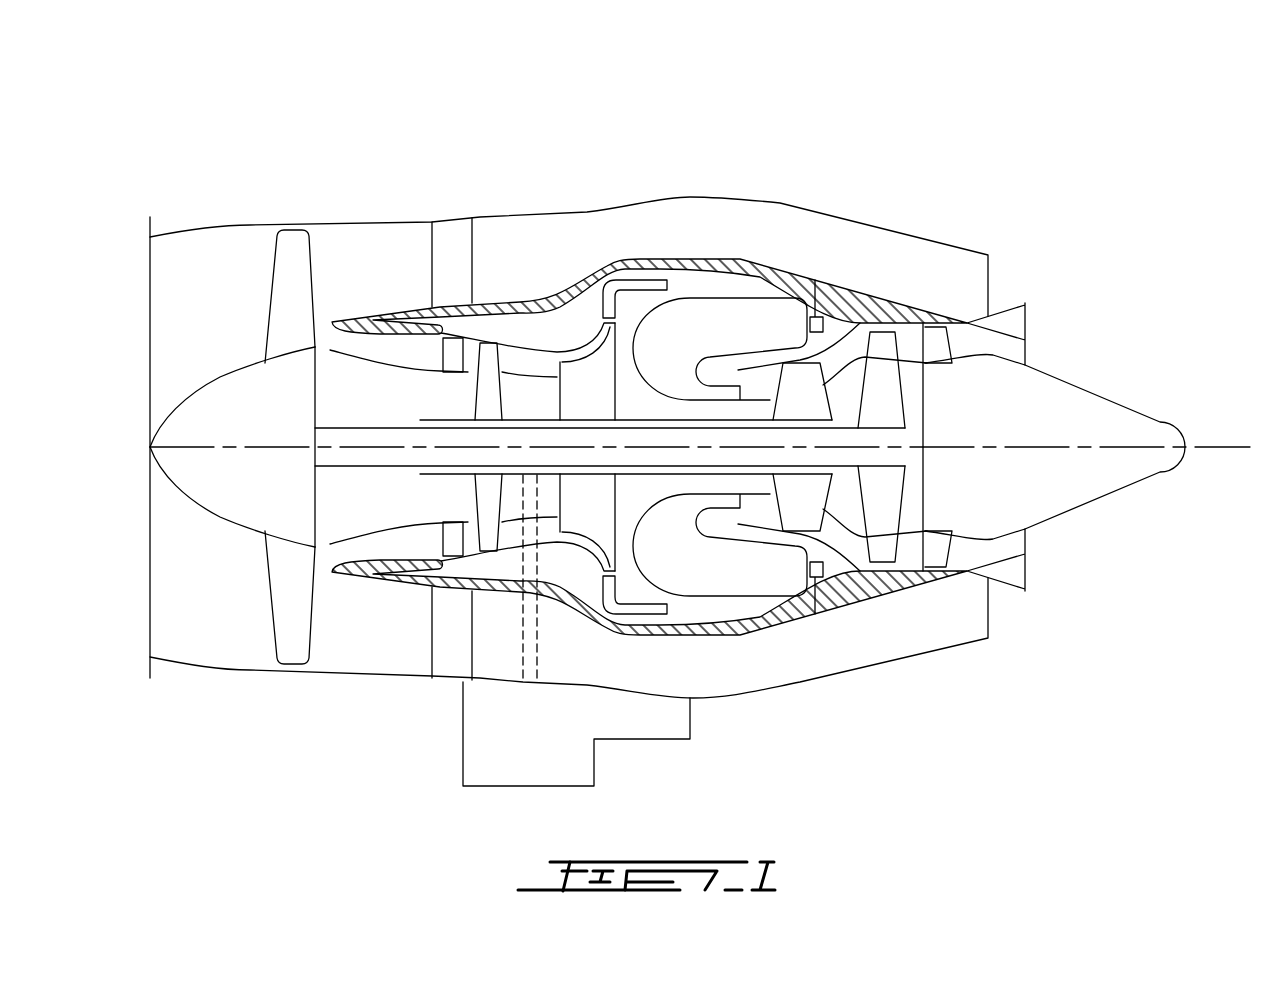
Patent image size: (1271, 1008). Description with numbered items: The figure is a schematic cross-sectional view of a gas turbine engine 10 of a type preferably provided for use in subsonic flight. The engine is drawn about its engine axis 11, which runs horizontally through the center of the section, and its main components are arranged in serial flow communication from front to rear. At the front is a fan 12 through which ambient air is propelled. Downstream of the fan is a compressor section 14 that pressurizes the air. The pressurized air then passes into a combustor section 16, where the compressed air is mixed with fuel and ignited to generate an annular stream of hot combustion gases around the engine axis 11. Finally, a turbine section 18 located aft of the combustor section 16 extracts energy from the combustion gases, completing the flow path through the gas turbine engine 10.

The gas turbine engine 10 is at (858, 152).
The engine axis 11 is at (1221, 447).
The fan 12 is at (287, 588).
The compressor section 14 is at (520, 353).
The combustor section 16 is at (722, 317).
The turbine section 18 is at (843, 508).